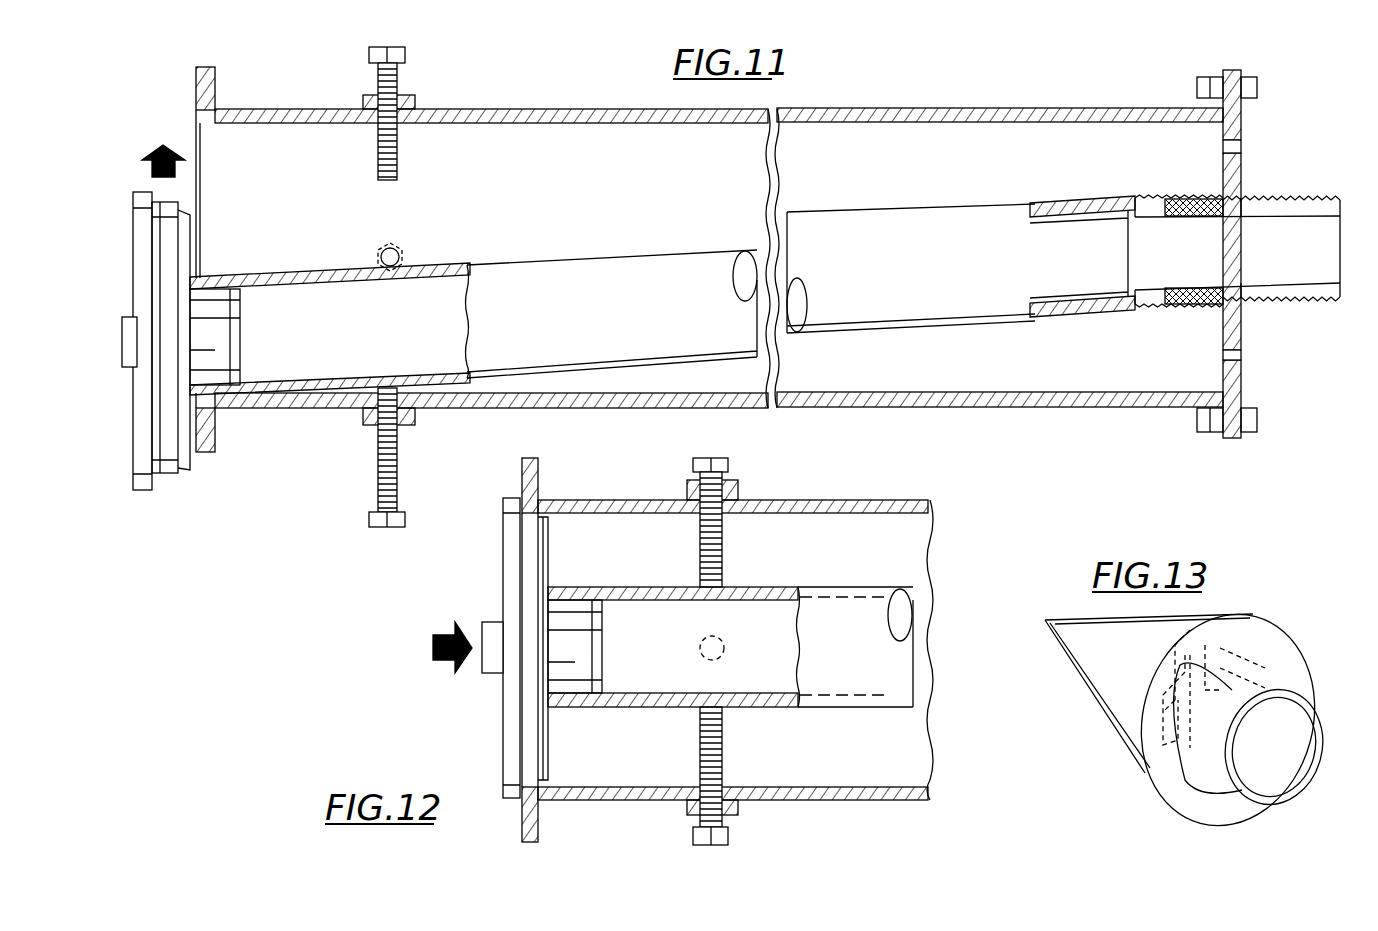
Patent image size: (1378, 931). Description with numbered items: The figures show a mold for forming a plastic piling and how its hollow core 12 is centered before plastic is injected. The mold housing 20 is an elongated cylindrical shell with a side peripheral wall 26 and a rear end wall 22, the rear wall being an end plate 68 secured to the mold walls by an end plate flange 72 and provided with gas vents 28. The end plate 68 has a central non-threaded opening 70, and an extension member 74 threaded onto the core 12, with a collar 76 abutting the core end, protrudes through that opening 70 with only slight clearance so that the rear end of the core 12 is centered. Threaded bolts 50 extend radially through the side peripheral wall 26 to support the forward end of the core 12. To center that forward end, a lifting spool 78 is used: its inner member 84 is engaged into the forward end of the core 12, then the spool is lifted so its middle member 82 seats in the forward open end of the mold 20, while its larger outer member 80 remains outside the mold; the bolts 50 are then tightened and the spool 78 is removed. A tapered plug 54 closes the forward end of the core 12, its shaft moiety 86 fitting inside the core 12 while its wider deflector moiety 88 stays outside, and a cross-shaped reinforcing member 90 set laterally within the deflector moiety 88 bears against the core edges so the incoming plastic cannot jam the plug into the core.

In FIG. 11, the core 12 is at (577, 252).
In FIG. 12, the core 12 is at (800, 572).
In FIG. 11, the mold housing 20 is at (540, 97).
In FIG. 12, the mold housing 20 is at (838, 497).
In FIG. 11, the rear end wall 22 is at (1232, 120).
In FIG. 11, the side peripheral wall 26 is at (893, 108).
In FIG. 12, the side peripheral wall 26 is at (586, 500).
In FIG. 11, the gas vent 28 is at (1232, 147).
In FIG. 11, the threaded bolts 50 is at (400, 82).
In FIG. 12, the threaded bolts 50 is at (710, 651).
In FIG. 13, the plug 54 is at (1305, 620).
In FIG. 11, the end plate 68 is at (1242, 332).
In FIG. 11, the central opening 70 is at (1242, 203).
In FIG. 11, the end plate flange 72 is at (1238, 65).
In FIG. 11, the extension member 74 is at (1305, 200).
In FIG. 11, the collar 76 is at (1190, 199).
In FIG. 11, the lifting spool 78 is at (165, 337).
In FIG. 12, the lifting spool 78 is at (490, 583).
In FIG. 11, the outer member 80 is at (133, 210).
In FIG. 11, the middle member 82 is at (180, 178).
In FIG. 11, the inner member 84 is at (186, 228).
In FIG. 13, the shaft moiety 86 is at (1288, 748).
In FIG. 13, the deflector moiety 88 is at (1092, 690).
In FIG. 13, the reinforcing member 90 is at (1140, 768).